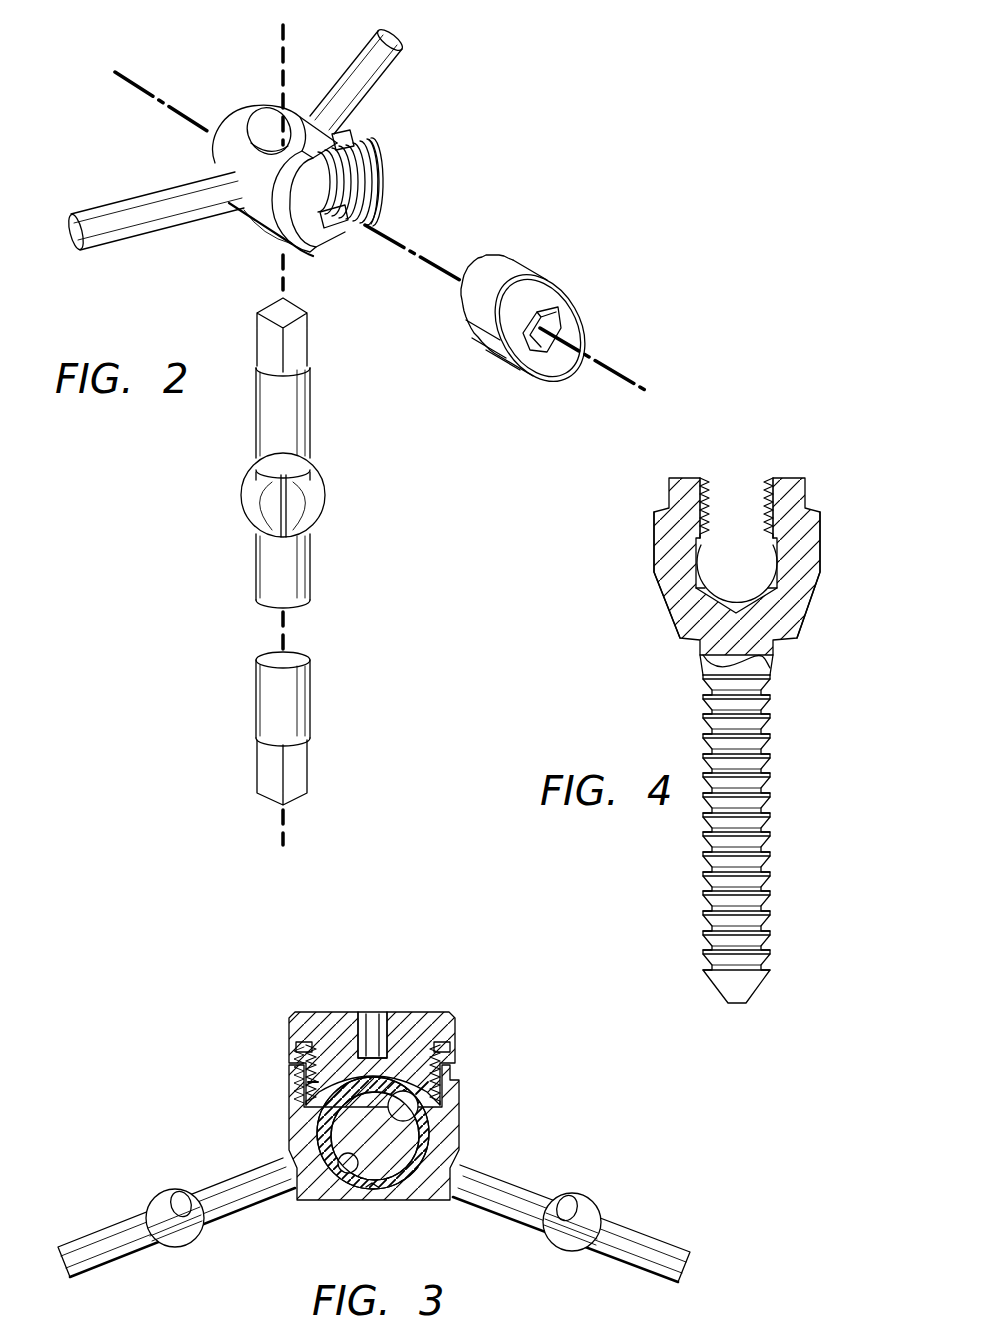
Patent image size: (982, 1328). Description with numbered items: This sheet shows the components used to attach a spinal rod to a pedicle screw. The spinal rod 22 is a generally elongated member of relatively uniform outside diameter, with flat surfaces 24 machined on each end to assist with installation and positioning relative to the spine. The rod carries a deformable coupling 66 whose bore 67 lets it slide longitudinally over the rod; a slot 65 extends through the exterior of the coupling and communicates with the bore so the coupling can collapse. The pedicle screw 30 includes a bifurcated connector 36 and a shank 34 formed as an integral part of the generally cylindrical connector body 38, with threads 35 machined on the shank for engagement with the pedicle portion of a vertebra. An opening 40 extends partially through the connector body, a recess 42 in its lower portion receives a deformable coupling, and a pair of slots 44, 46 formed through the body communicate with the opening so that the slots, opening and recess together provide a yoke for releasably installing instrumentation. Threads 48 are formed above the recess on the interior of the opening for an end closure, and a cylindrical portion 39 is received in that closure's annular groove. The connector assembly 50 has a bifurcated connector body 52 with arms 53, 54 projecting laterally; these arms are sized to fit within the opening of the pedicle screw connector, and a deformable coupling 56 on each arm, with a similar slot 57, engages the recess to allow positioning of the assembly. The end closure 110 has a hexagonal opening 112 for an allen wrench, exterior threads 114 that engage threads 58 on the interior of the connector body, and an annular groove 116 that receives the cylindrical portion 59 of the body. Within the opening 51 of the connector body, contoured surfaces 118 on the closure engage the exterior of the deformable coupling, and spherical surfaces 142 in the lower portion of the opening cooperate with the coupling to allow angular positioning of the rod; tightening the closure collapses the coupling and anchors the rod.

In FIG. 2, the spinal rod 22 is at (256, 690).
In FIG. 3, the spinal rod 22 is at (388, 1147).
In FIG. 2, the flat surfaces 24 is at (300, 341).
In FIG. 4, the pedicle screw 30 is at (674, 857).
In FIG. 4, the shank 34 is at (768, 654).
In FIG. 4, the threads 35 is at (705, 915).
In FIG. 4, the bifurcated connector 36 is at (820, 519).
In FIG. 4, the connector body 38 is at (657, 541).
In FIG. 4, the cylindrical portion 39 is at (806, 480).
In FIG. 4, the opening 40 is at (761, 494).
In FIG. 4, the recess 42 is at (727, 599).
In FIG. 2, the slot 44 is at (350, 142).
In FIG. 2, the slot 46 is at (340, 232).
In FIG. 4, the threads 48 is at (706, 480).
In FIG. 2, the connector assembly 50 is at (410, 137).
In FIG. 3, the connector assembly 50 is at (506, 1061).
In FIG. 2, the opening 51 is at (319, 246).
In FIG. 3, the opening 51 is at (460, 1092).
In FIG. 2, the bifurcated connector body 52 is at (246, 213).
In FIG. 3, the bifurcated connector body 52 is at (460, 1146).
In FIG. 2, the arm 53 is at (122, 198).
In FIG. 3, the arm 53 is at (92, 1236).
In FIG. 2, the arm 54 is at (350, 63).
In FIG. 3, the arm 54 is at (650, 1241).
In FIG. 3, the deformable coupling 56 is at (160, 1194).
In FIG. 3, the slot 57 is at (374, 1188).
In FIG. 2, the threads 58 is at (374, 206).
In FIG. 3, the threads 58 is at (430, 1040).
In FIG. 2, the cylindrical portion 59 is at (378, 164).
In FIG. 3, the cylindrical portion 59 is at (300, 1064).
In FIG. 2, the slot 65 is at (321, 499).
In FIG. 3, the slot 65 is at (431, 1114).
In FIG. 2, the deformable coupling 66 is at (246, 496).
In FIG. 3, the deformable coupling 66 is at (411, 1186).
In FIG. 3, the bore 67 is at (337, 1188).
In FIG. 2, the end closure 110 is at (571, 286).
In FIG. 3, the end closure 110 is at (321, 1012).
In FIG. 2, the hexagonal opening 112 is at (541, 353).
In FIG. 3, the hexagonal opening 112 is at (374, 1014).
In FIG. 3, the threads 114 is at (447, 1047).
In FIG. 3, the annular groove 116 is at (296, 1049).
In FIG. 3, the contoured surfaces 118 is at (313, 1086).
In FIG. 3, the spherical surfaces 142 is at (374, 1194).